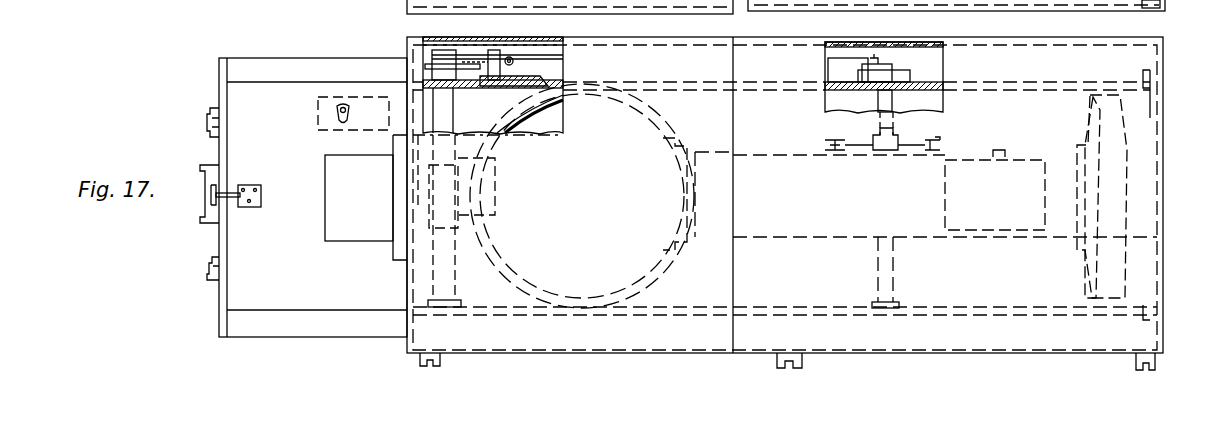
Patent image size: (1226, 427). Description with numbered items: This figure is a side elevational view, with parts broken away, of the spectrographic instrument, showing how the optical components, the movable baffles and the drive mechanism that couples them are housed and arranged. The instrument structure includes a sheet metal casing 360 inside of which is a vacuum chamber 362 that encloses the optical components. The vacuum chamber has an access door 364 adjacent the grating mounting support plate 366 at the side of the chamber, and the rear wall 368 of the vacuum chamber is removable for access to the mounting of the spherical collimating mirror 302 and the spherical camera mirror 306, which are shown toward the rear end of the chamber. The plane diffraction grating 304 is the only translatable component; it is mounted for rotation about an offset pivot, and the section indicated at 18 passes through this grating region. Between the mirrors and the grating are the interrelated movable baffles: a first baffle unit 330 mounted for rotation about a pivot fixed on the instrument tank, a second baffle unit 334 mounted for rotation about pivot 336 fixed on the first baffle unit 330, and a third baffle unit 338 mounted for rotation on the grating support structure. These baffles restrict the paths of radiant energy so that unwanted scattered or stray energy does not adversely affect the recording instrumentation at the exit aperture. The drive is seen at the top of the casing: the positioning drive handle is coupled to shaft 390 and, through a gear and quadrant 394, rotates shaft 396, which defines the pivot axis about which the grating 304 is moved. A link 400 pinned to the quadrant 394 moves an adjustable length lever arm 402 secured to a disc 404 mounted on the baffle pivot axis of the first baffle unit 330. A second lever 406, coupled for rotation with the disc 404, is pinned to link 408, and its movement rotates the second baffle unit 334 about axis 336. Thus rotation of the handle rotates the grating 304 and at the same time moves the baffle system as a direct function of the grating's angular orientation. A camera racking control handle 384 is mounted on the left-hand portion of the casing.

The section line 18 is at (383, 152).
The spherical collimating mirror 302 is at (1090, 238).
The plane diffraction grating 304 is at (497, 177).
The spherical camera mirror 306 is at (1116, 165).
The first baffle unit 330 is at (1000, 240).
The second baffle unit 334 is at (790, 240).
The pivot 336 is at (1001, 148).
The third baffle unit 338 is at (497, 212).
The sheet metal casing 360 is at (1032, 46).
The vacuum chamber 362 is at (932, 80).
The access door 364 is at (650, 130).
The grating mounting support plate 366 is at (540, 74).
The rear wall 368 is at (1152, 118).
The camera racking control handle 384 is at (318, 113).
The shaft 390 is at (512, 58).
The quadrant 394 is at (436, 64).
The shaft 396 is at (450, 104).
The link 400 is at (831, 58).
The adjustable length lever arm 402 is at (890, 45).
The disc 404 is at (905, 74).
The second lever 406 is at (840, 140).
The link 408 is at (892, 152).